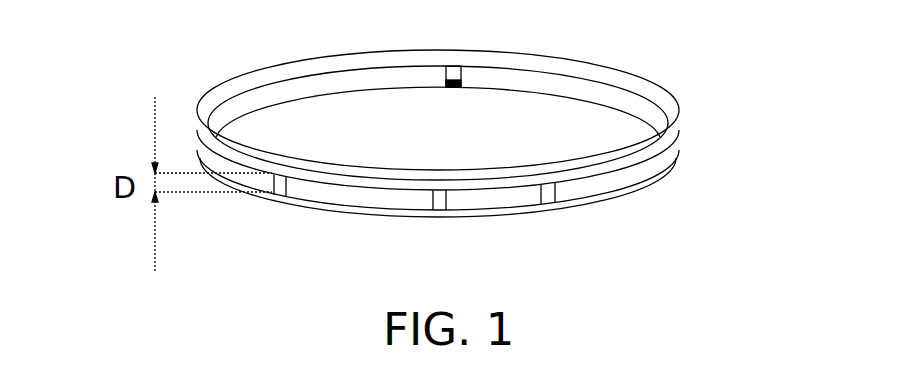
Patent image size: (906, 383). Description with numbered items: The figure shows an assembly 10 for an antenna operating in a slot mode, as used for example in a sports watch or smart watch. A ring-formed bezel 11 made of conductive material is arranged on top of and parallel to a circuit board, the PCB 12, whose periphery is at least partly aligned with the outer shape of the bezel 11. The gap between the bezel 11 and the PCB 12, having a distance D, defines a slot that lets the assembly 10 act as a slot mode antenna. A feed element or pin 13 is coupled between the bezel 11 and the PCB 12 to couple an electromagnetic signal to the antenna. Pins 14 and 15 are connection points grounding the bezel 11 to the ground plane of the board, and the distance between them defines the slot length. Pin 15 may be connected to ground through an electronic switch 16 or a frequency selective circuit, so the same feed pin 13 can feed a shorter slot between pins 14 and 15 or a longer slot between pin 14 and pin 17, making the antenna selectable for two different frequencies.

The assembly 10 is at (183, 69).
The ring-formed bezel 11 is at (655, 88).
The circuit board (PCB) 12 is at (650, 183).
The feed element or pin 13 is at (560, 208).
The pin 14 is at (440, 200).
The pin 15 is at (460, 66).
The electronic switch 16 is at (455, 87).
The pin 17 is at (292, 200).